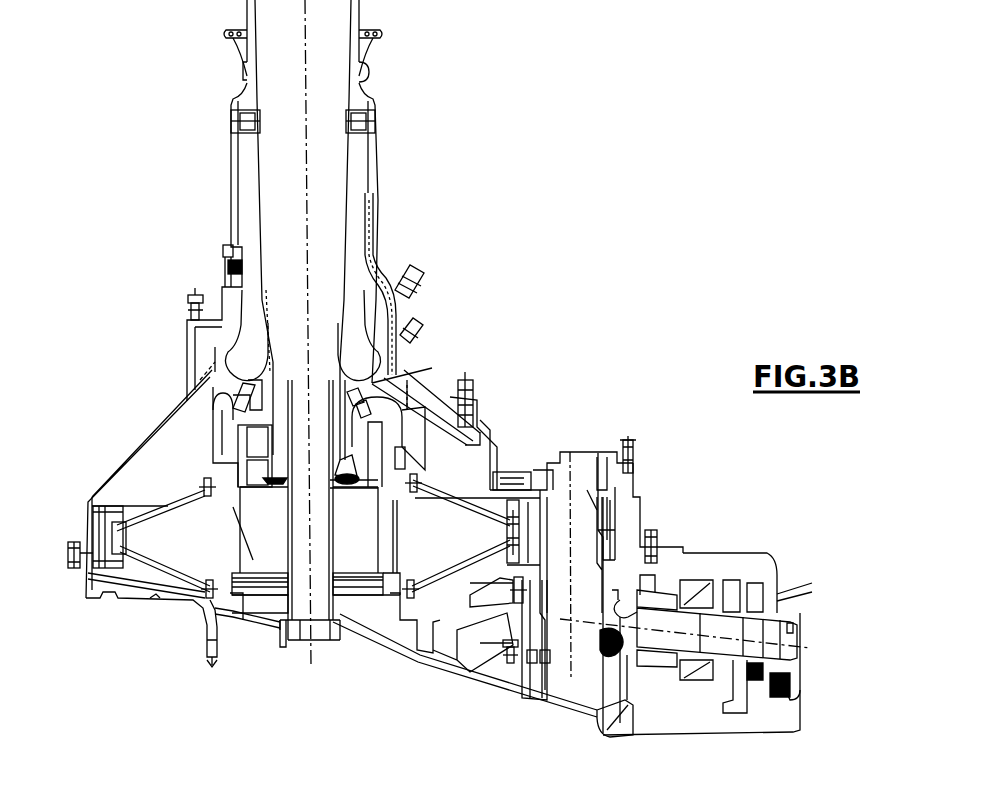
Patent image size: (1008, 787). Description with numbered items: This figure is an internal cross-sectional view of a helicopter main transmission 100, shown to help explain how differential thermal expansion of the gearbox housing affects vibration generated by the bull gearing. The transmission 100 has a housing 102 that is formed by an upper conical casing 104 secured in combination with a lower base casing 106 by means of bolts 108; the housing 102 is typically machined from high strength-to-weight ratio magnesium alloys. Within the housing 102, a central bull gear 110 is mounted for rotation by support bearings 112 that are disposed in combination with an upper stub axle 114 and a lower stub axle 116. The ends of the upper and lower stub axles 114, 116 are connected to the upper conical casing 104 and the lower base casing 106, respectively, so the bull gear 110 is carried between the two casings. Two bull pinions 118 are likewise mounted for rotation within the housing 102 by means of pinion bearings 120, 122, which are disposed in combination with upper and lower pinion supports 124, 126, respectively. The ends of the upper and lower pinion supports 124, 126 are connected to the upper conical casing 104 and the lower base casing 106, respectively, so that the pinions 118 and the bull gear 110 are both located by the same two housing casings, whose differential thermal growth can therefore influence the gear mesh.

The main transmission 100 is at (675, 292).
The housing 102 is at (503, 415).
The upper conical casing 104 is at (153, 418).
The lower base casing 106 is at (196, 604).
The bolts 108 is at (72, 552).
The central bull gear 110 is at (118, 510).
The support bearings 112 is at (232, 500).
The upper stub axle 114 is at (430, 413).
The lower stub axle 116 is at (392, 590).
The bull pinions 118 is at (605, 517).
The pinion bearings 120 is at (533, 452).
The pinion bearings 122 is at (535, 690).
The upper pinion supports 124 is at (610, 450).
The lower pinion supports 126 is at (607, 655).